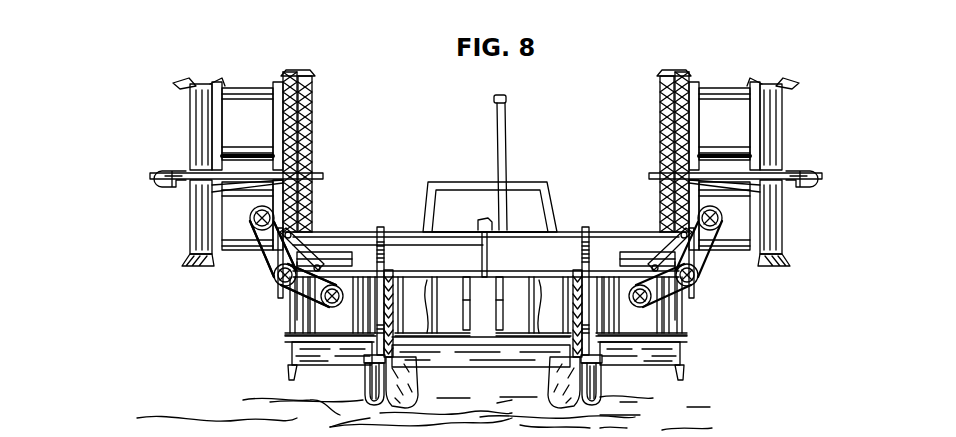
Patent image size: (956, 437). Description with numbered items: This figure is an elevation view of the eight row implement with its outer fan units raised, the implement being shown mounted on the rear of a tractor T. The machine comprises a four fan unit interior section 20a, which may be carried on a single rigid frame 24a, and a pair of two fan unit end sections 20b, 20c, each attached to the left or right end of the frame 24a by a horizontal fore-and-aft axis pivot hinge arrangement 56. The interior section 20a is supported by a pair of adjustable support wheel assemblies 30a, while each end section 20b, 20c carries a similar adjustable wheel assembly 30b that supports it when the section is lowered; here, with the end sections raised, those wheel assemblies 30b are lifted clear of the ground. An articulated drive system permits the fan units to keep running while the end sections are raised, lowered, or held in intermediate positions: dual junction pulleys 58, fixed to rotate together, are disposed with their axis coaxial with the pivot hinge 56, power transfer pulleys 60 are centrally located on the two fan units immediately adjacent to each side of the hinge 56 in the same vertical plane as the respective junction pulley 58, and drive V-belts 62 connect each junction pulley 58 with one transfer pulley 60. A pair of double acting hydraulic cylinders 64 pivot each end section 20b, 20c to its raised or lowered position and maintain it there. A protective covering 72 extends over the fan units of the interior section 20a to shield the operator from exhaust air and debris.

The trailer T is at (455, 158).
The interior section 20a is at (563, 223).
The end section 20b is at (322, 137).
The end section 20c is at (640, 115).
The frame 24a is at (415, 364).
The adjustable support wheel assembly 30a is at (363, 394).
The adjustable wheel assembly 30b is at (160, 183).
The pivot hinge arrangement 56 is at (690, 292).
The dual junction pulleys 58 is at (668, 302).
The power transfer pulley 60 is at (712, 212).
The drive V-belt 62 is at (278, 282).
The double acting hydraulic cylinder 64 is at (330, 252).
The protective covering 72 is at (407, 248).